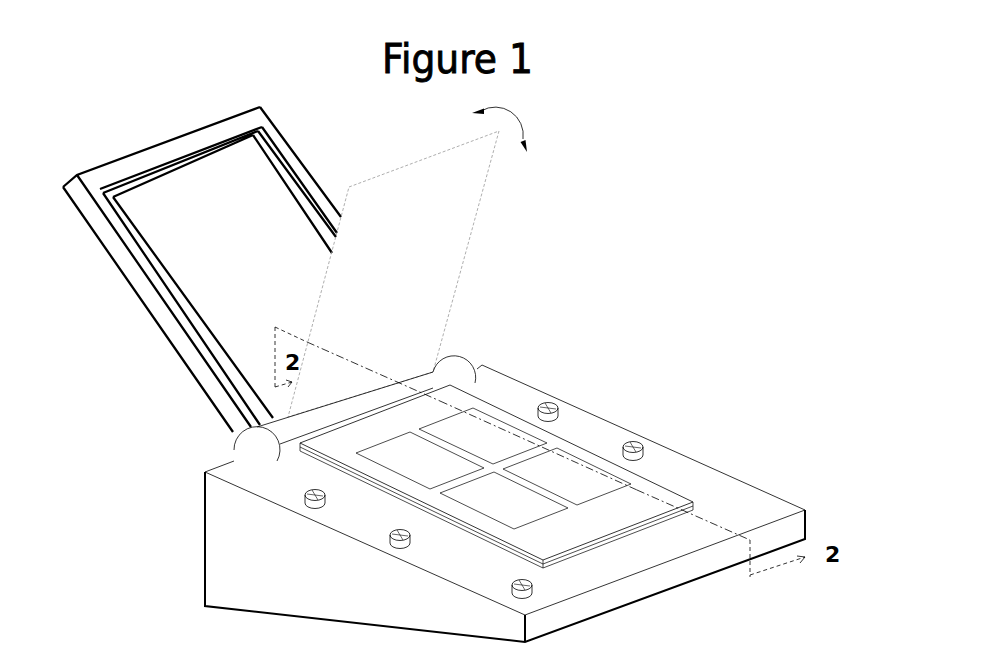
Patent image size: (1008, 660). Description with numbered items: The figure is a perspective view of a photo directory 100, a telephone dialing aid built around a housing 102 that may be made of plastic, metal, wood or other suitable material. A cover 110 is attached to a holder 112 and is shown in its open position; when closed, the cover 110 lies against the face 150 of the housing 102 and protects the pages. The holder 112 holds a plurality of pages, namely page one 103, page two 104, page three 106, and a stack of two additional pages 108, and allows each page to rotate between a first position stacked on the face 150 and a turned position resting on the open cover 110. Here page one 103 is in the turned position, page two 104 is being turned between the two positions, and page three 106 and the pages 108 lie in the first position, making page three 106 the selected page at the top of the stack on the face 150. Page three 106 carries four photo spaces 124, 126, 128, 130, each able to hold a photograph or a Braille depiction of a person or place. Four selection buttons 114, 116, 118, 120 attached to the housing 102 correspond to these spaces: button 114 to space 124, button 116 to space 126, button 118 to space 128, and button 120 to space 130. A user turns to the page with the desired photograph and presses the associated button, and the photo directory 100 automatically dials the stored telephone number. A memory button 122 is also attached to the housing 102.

The photo directory 100 is at (623, 161).
The housing 102 is at (205, 528).
The page one 103 is at (240, 193).
The page two 104 is at (467, 256).
The page three 106 is at (642, 487).
The stack of two additional pages 108 is at (703, 503).
The cover 110 is at (146, 292).
The holder 112 is at (235, 446).
The selection button 114 is at (308, 500).
The selection button 116 is at (392, 545).
The selection button 118 is at (550, 402).
The selection button 120 is at (637, 442).
The memory button 122 is at (536, 590).
The photo space 124 is at (420, 462).
The photo space 126 is at (505, 502).
The photo space 128 is at (483, 437).
The photo space 130 is at (572, 477).
The face 150 is at (583, 554).